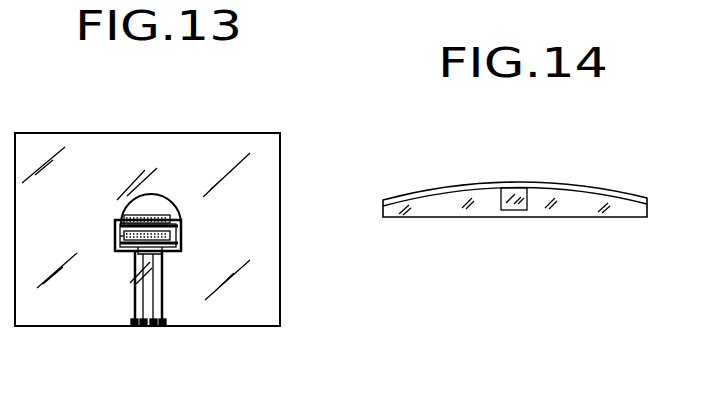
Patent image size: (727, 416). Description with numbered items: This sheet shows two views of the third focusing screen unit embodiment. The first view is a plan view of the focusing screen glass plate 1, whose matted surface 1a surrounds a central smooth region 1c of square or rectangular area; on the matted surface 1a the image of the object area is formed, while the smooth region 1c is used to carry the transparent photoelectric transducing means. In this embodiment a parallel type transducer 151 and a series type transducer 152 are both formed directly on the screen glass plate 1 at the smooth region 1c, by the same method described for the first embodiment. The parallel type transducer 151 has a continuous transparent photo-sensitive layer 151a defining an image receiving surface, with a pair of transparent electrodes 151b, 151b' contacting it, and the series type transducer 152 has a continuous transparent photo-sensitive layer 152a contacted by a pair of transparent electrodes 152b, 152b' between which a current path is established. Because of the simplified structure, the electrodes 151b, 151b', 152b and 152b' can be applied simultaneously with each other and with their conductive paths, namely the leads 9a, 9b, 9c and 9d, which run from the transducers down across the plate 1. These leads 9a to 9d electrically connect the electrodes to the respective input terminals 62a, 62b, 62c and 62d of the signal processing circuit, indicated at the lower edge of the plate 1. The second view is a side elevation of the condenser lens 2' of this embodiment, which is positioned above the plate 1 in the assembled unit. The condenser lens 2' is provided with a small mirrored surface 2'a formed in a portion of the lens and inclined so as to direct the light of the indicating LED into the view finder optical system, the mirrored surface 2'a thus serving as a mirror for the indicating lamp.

In FIG. 13, the focusing screen glass plate 1 is at (245, 133).
In FIG. 13, the matted surface 1a is at (51, 206).
In FIG. 13, the central smooth region 1c is at (147, 203).
In FIG. 13, the series type transducer 152 is at (158, 213).
In FIG. 13, the transparent photo-sensitive layer 152a is at (133, 215).
In FIG. 13, the transparent electrode 152b is at (175, 200).
In FIG. 13, the transparent electrode 152b' is at (99, 196).
In FIG. 13, the parallel type transducer 151 is at (181, 230).
In FIG. 13, the transparent photo-sensitive layer 151a is at (181, 241).
In FIG. 13, the transparent electrode 151b is at (172, 265).
In FIG. 13, the transparent electrode 151b' is at (92, 232).
In FIG. 13, the lead 9a is at (154, 297).
In FIG. 13, the lead 9b is at (142, 277).
In FIG. 13, the lead 9c is at (163, 312).
In FIG. 13, the lead 9d is at (133, 303).
In FIG. 13, the input terminal 62a is at (153, 328).
In FIG. 13, the input terminal 62b is at (143, 328).
In FIG. 13, the input terminal 62c is at (163, 328).
In FIG. 13, the input terminal 62d is at (134, 328).
In FIG. 14, the condenser lens 2' is at (515, 179).
In FIG. 14, the mirrored surface 2'a is at (498, 235).